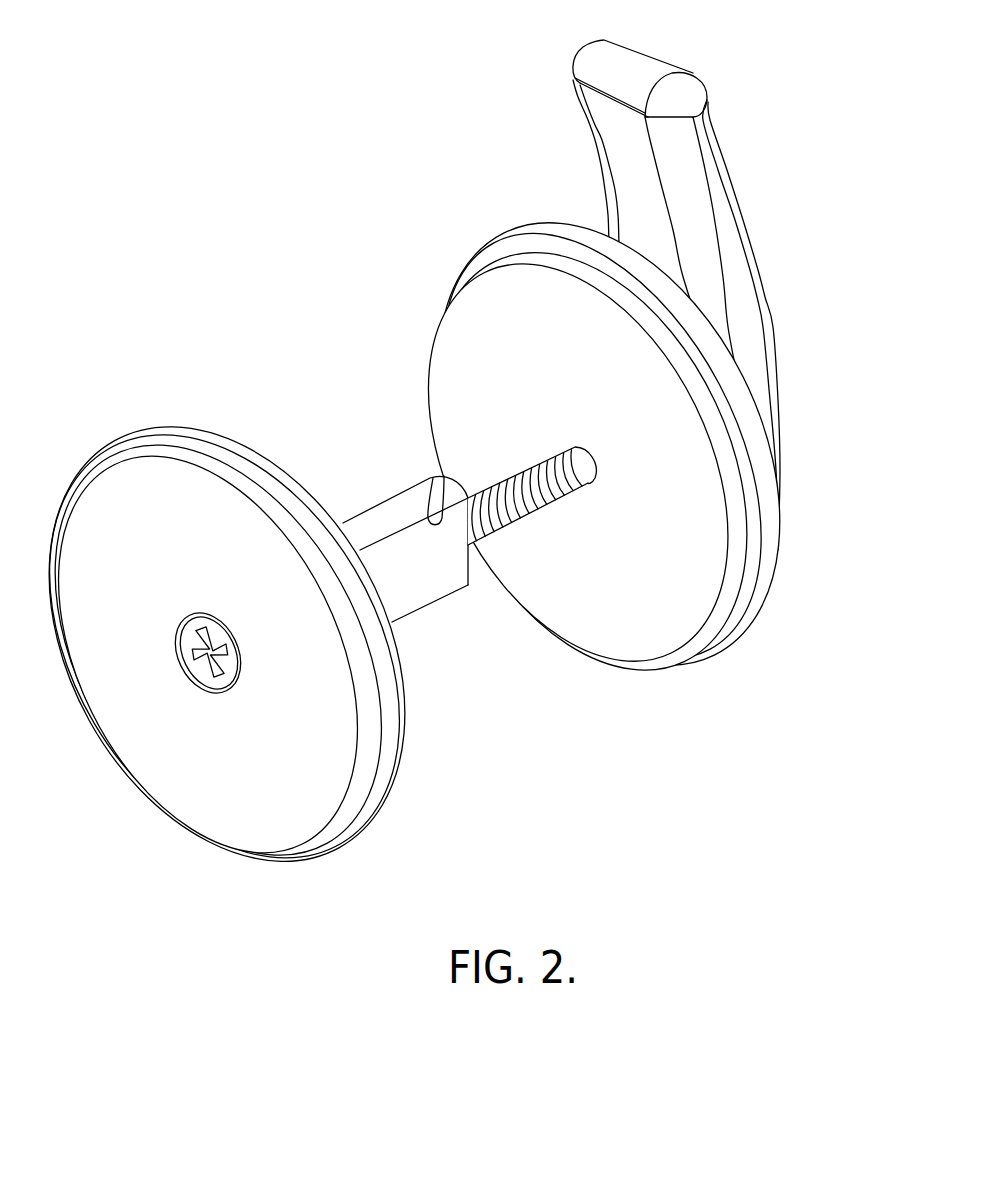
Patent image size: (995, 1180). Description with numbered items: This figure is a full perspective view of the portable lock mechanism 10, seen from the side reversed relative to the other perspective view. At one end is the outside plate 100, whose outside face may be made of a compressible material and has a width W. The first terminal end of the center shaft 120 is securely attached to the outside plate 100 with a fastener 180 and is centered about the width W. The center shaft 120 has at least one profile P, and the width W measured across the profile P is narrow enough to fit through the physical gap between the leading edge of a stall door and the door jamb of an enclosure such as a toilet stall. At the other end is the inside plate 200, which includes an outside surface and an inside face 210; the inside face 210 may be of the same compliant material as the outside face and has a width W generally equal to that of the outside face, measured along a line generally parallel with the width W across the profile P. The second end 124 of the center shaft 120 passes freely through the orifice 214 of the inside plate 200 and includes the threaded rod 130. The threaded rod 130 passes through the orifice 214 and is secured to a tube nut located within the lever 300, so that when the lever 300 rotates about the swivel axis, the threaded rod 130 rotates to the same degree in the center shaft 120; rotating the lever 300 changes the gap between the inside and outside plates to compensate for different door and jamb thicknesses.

The portable lock mechanism 10 is at (624, 730).
The outside plate 100 is at (120, 730).
The center shaft 120 is at (462, 570).
The second end 124 is at (585, 490).
The threaded rod 130 is at (500, 484).
The fastener 180 is at (229, 670).
The inside plate 200 is at (608, 447).
The inside face 210 is at (625, 647).
The orifice 214 is at (557, 447).
The lever 300 is at (747, 294).
The profile P is at (430, 478).
The width W is at (430, 385).